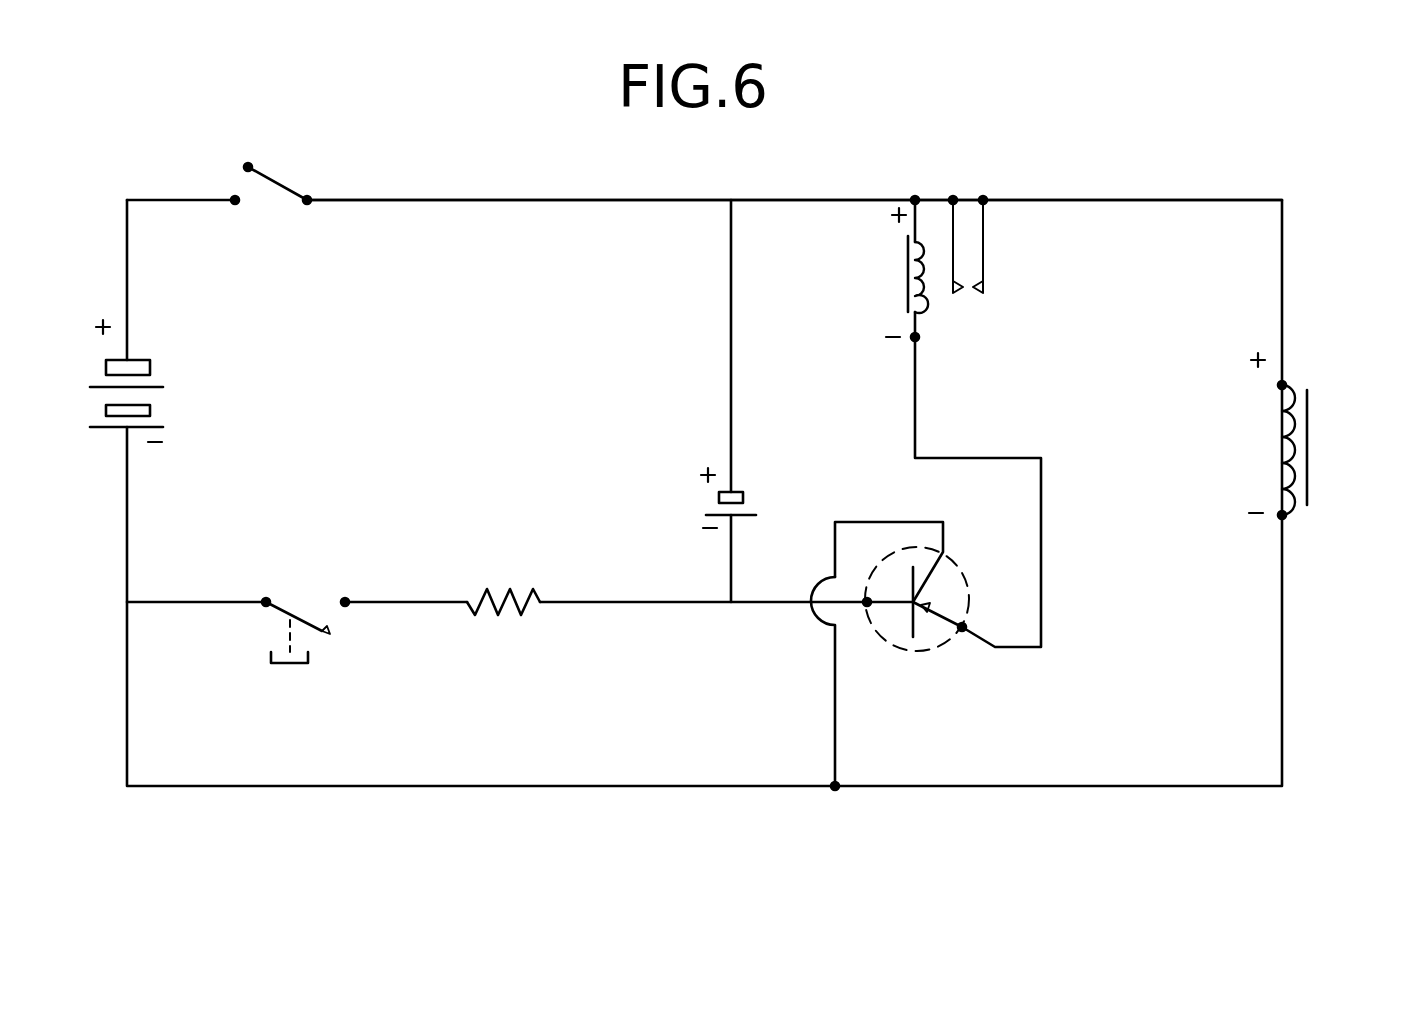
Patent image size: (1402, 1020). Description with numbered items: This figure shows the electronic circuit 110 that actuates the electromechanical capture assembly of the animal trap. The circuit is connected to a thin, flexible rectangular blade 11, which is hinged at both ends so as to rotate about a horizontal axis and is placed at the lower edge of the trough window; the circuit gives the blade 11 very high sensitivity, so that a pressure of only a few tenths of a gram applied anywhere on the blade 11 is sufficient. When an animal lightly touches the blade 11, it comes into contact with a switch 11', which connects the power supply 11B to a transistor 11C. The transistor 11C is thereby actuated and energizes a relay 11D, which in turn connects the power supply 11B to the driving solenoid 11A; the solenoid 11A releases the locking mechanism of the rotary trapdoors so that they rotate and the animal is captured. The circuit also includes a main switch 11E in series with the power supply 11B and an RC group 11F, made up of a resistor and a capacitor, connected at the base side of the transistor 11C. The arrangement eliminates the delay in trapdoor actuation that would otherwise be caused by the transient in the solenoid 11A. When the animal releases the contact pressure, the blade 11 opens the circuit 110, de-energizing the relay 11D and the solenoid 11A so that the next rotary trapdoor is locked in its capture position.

The electronic circuit 110 is at (681, 200).
The main switch 11E is at (292, 189).
The power supply 11B is at (150, 410).
The switch 11' is at (292, 591).
The blade 11 is at (275, 674).
The RC group 11F is at (703, 512).
The relay 11D is at (902, 295).
The transistor 11C is at (968, 594).
The solenoid 11A is at (1308, 466).